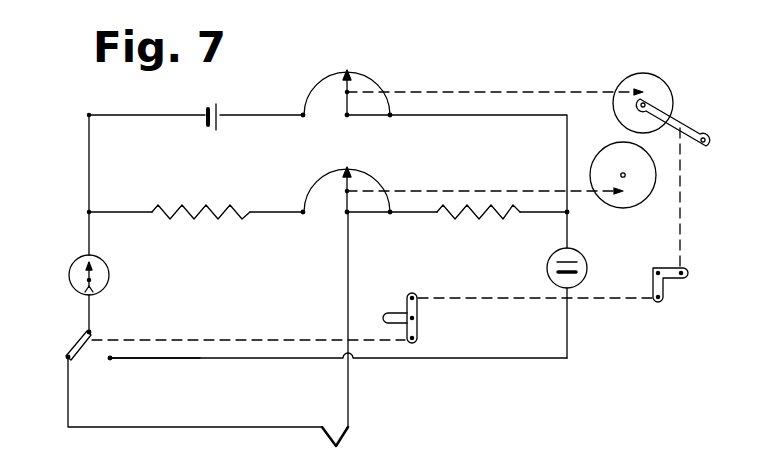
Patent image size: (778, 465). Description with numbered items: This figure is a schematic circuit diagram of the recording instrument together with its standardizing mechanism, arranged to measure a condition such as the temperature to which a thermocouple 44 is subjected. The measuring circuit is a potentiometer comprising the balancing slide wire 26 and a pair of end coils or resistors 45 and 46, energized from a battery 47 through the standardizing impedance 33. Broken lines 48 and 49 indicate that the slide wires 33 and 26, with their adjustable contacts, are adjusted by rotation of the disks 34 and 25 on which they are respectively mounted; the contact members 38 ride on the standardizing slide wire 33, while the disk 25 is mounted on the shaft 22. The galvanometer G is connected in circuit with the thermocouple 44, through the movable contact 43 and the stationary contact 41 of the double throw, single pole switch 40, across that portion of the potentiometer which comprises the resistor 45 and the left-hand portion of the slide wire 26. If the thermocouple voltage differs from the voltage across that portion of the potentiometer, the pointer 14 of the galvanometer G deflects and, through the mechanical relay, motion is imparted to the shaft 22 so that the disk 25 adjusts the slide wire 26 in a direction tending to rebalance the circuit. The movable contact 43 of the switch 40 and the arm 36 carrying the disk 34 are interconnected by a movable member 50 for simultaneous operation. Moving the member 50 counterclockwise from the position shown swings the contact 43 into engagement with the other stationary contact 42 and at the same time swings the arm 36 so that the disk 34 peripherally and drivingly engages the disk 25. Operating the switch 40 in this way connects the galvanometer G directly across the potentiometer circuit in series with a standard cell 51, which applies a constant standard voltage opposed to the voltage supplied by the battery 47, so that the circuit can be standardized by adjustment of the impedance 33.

The pointer 14 is at (92, 280).
The shaft 22 is at (621, 174).
The disk 25 is at (622, 208).
The slide wire 26 is at (364, 173).
The standardizing impedance 33 is at (367, 75).
The disk 34 is at (657, 78).
The arm 36 is at (675, 117).
The contact members 38 is at (343, 102).
The double throw, single pole switch 40 is at (49, 347).
The stationary contact 41 is at (66, 358).
The stationary contact 42 is at (110, 360).
The movable contact 43 is at (78, 343).
The thermocouple 44 is at (350, 430).
The resistor 45 is at (223, 218).
The resistor 46 is at (470, 215).
The battery 47 is at (206, 108).
The broken line 48 is at (467, 93).
The broken line 49 is at (452, 191).
The movable member 50 is at (417, 322).
The standard cell 51 is at (547, 272).
The galvanometer G is at (108, 262).